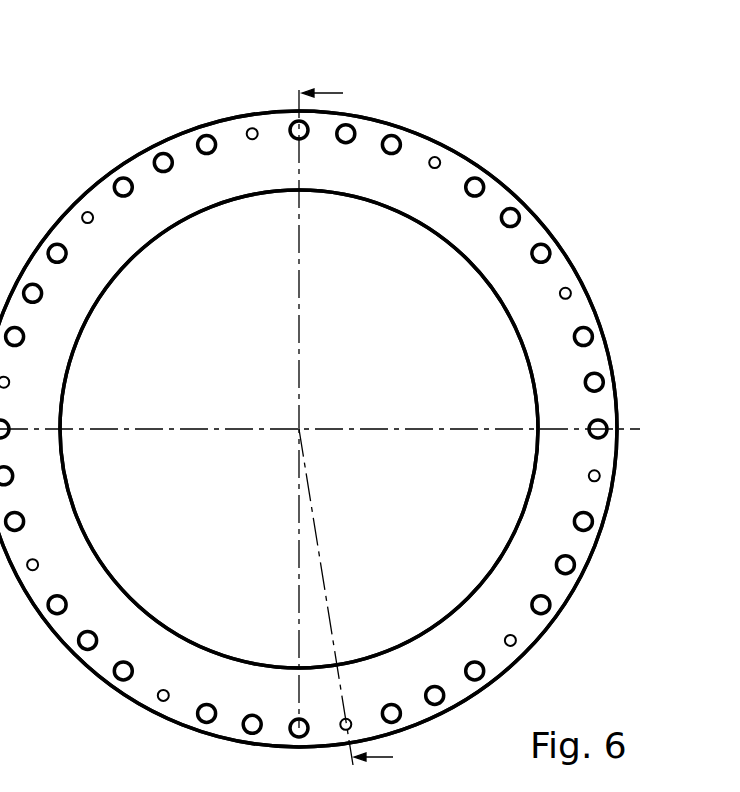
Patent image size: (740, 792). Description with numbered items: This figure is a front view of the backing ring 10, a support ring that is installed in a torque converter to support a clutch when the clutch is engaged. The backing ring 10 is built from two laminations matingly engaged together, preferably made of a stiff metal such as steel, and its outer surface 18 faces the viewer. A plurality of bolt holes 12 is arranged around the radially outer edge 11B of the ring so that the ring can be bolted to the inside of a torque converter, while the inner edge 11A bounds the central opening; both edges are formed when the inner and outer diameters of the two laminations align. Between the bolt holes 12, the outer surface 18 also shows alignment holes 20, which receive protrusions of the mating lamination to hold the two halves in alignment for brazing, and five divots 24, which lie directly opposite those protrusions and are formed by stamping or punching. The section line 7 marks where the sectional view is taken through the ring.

The backing ring 10 is at (117, 105).
The inner edge 11A is at (438, 240).
The radially outer edge 11B is at (381, 121).
The bolt holes 12 is at (163, 160).
The outer surface 18 is at (483, 237).
The alignment holes 20 is at (252, 133).
The divots 24 is at (434, 161).
The section line 7- 7 is at (357, 425).